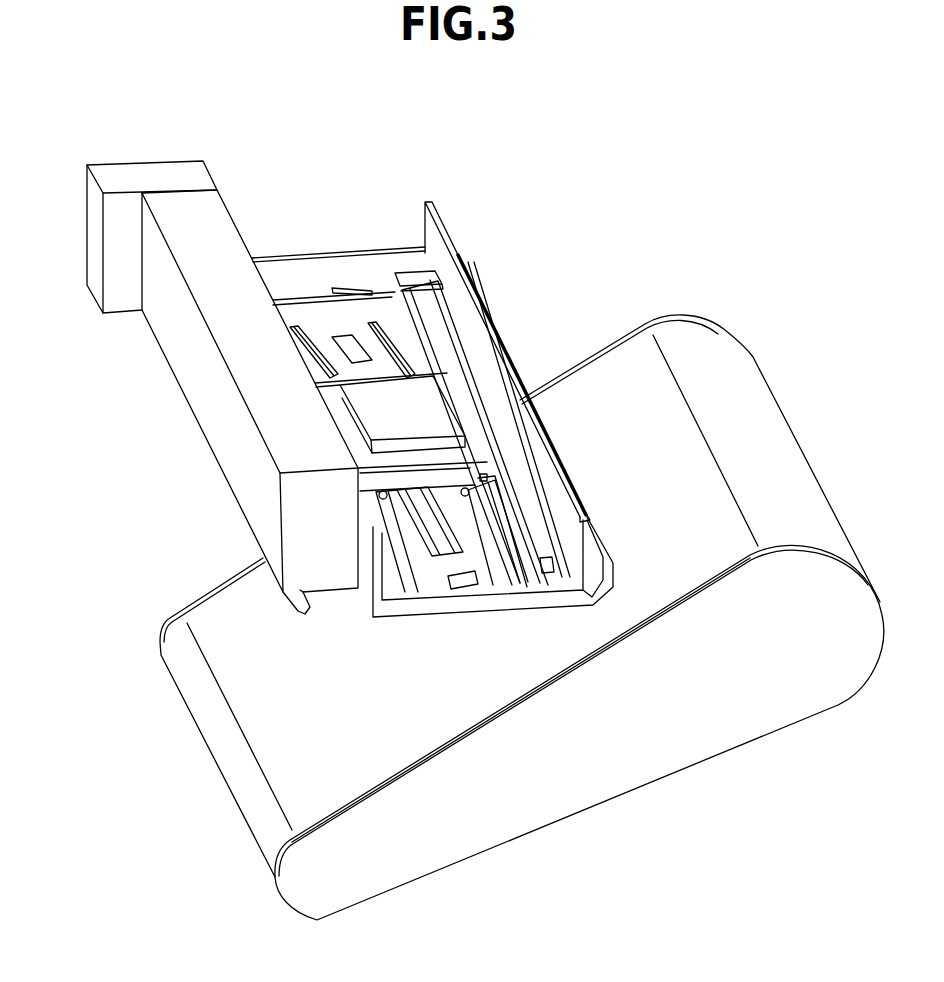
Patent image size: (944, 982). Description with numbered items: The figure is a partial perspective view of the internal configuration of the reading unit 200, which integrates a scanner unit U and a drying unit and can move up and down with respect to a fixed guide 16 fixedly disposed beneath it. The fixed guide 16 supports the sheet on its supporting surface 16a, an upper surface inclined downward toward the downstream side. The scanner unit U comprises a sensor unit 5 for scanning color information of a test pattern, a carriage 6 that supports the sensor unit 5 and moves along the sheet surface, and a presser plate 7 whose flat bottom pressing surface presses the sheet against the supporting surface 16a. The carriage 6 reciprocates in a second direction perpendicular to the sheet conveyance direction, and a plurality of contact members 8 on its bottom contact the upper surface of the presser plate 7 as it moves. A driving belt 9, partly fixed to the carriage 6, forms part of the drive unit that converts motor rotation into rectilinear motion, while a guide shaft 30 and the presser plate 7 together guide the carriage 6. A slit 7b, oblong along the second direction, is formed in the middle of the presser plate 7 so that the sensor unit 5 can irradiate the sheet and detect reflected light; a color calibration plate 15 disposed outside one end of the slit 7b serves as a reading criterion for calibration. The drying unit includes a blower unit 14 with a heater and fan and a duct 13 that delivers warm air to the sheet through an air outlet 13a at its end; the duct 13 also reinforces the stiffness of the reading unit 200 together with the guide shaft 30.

The reading unit 200 is at (548, 180).
The scanner unit U is at (302, 178).
The blower unit 14 is at (118, 255).
The duct 13 is at (229, 402).
The air outlet 13a is at (303, 607).
The presser plate 7 is at (300, 333).
The slit 7b is at (350, 348).
The driving belt 9 is at (430, 320).
The sensor unit 5 is at (437, 402).
The carriage 6 is at (475, 448).
The guide shaft 30 is at (498, 507).
The contact members 8 is at (462, 495).
The color calibration plate 15 is at (463, 588).
The fixed guide 16 is at (668, 762).
The supporting surface 16a is at (458, 690).